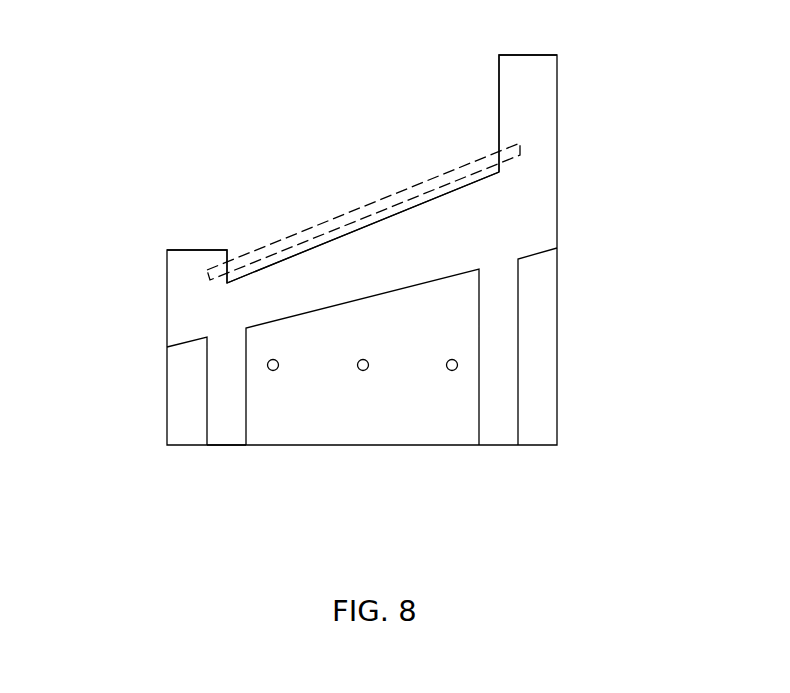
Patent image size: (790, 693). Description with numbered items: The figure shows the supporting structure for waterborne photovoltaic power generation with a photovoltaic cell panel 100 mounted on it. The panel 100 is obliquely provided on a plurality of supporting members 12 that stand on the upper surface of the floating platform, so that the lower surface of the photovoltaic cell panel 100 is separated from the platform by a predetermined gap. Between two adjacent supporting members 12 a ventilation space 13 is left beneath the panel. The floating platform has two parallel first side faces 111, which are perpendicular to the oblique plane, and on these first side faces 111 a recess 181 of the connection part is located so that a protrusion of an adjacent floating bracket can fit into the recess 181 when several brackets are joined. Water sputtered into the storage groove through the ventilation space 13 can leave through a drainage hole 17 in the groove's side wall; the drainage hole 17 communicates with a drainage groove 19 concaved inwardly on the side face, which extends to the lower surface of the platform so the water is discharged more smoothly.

The supporting member 12 is at (195, 262).
The ventilation space 13 is at (353, 197).
The photovoltaic cell panel 100 is at (467, 168).
The first side face 111 is at (218, 423).
The drainage hole 17 is at (366, 372).
The drainage groove 19 is at (416, 424).
The recess 181 is at (183, 397).